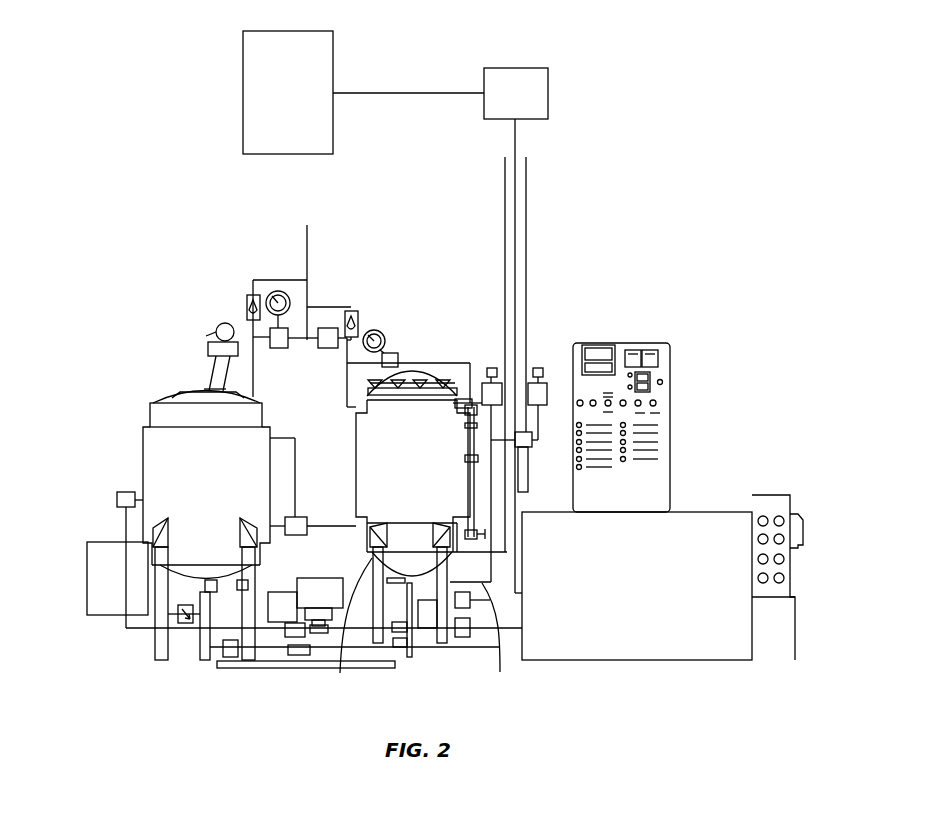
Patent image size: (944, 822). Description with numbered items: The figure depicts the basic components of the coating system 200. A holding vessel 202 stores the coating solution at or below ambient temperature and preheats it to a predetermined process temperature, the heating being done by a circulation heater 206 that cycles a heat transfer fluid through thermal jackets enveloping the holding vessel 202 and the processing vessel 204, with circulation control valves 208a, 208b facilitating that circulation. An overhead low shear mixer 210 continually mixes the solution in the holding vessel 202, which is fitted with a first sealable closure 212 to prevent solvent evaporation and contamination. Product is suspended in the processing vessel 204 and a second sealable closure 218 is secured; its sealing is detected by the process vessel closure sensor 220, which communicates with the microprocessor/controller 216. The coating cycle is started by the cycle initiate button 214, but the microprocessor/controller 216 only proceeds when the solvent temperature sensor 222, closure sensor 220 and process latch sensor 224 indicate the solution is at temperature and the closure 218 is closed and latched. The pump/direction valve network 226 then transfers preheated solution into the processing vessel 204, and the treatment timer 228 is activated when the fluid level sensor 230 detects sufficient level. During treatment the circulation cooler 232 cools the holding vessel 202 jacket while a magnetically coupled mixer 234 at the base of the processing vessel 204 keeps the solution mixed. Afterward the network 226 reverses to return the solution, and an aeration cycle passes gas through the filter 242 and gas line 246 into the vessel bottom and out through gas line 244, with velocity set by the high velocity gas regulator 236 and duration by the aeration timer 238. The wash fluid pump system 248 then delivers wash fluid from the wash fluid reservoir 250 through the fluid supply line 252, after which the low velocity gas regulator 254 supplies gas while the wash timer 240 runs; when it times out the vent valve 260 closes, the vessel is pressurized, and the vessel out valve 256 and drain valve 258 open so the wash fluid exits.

The coating system 200 is at (432, 58).
The holding vessel 202 is at (180, 491).
The processing vessel 204 is at (400, 496).
The circulation heater 206 is at (686, 511).
The circulation control valve 208a is at (290, 517).
The circulation control valve 208b is at (122, 492).
The overhead low shear mixer 210 is at (212, 366).
The first sealable closure 212 is at (187, 397).
The cycle initiate button 214 is at (576, 425).
The microprocessor/controller 216 is at (631, 396).
The second sealable closure 218 is at (415, 378).
The process vessel closure sensor 220 is at (368, 391).
The solvent temperature sensor 222 is at (150, 450).
The process latch sensor 224 is at (395, 352).
The pump/direction valve network 226 is at (335, 574).
The treatment timer 228 is at (583, 358).
The fluid level sensor 230 is at (468, 450).
The circulation cooler 232 is at (108, 541).
The magnetically coupled mixer 234 is at (343, 668).
The high velocity gas regulator 236 is at (491, 355).
The aeration timer 238 is at (645, 348).
The wash timer 240 is at (662, 362).
The filter 242 is at (536, 474).
The gas line 244 is at (340, 418).
The gas line 246 is at (472, 600).
The wash fluid pump system 248 is at (548, 97).
The wash fluid reservoir 250 is at (243, 96).
The fluid supply line 252 is at (516, 145).
The low velocity gas regulator 254 is at (540, 355).
The vessel out valve 256 is at (502, 642).
The drain valve 258 is at (462, 640).
The vent valve 260 is at (328, 328).